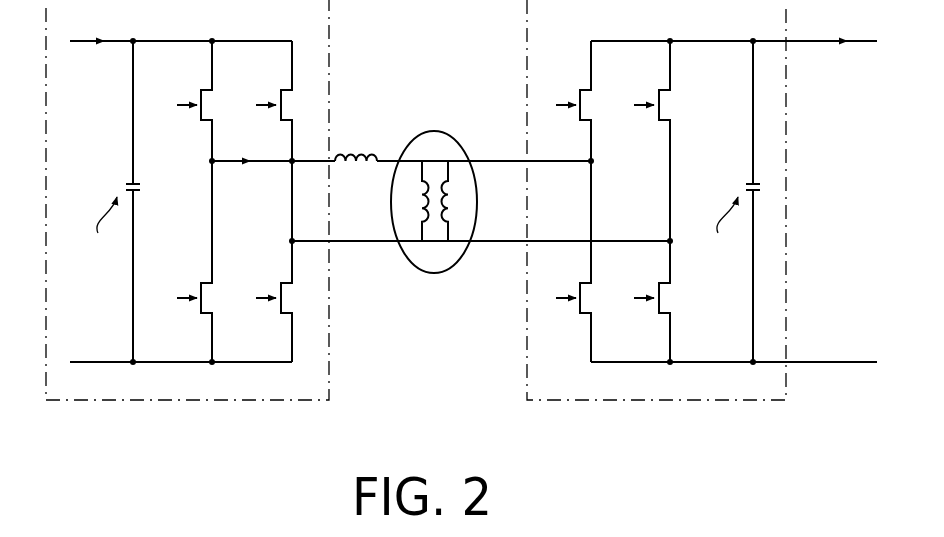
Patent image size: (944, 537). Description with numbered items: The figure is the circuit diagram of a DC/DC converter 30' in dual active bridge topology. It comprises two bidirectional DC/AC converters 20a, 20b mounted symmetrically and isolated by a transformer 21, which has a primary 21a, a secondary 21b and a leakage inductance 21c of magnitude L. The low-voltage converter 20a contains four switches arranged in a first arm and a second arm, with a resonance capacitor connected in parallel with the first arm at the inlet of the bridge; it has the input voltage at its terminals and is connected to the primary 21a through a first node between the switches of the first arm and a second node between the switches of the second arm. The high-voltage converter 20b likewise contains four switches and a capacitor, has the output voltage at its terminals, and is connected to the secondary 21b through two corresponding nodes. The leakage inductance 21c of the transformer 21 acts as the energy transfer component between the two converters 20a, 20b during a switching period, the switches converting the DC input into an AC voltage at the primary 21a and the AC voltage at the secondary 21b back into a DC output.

The low-voltage bidirectional DC/AC converter 20a is at (257, 400).
The high-voltage bidirectional DC/AC converter 20b is at (691, 400).
The transformer 21 is at (430, 272).
The primary 21a is at (432, 178).
The secondary 21b is at (441, 188).
The leakage inductance 21c is at (372, 152).
The DC/DC converter in DAB topology 30' is at (441, 270).